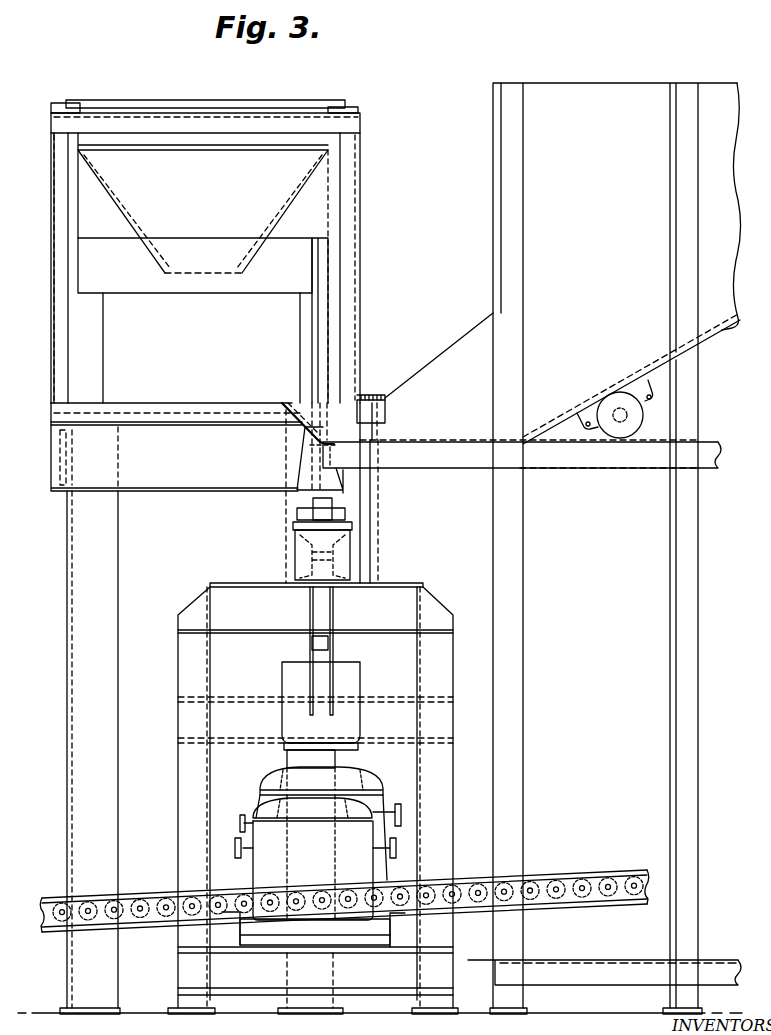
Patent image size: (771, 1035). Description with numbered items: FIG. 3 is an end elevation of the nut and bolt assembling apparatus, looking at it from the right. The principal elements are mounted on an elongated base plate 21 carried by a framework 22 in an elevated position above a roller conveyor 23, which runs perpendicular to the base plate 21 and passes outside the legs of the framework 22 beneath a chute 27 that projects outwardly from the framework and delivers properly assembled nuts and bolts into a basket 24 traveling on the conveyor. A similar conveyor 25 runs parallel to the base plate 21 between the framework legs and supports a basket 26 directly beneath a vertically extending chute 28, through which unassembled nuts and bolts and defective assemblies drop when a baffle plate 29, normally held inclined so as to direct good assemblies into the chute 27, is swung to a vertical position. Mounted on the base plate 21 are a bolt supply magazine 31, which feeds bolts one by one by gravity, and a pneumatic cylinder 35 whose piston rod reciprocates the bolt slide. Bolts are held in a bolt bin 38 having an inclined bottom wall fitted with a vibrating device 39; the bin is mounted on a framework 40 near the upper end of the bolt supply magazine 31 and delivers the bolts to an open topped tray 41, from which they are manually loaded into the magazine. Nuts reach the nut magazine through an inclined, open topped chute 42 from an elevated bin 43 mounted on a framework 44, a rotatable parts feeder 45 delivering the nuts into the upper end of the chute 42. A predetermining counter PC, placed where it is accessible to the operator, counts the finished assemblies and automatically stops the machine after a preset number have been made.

The base plate 21 is at (298, 527).
The framework 22 is at (298, 556).
The roller conveyor 23 is at (535, 885).
The basket 24 is at (380, 797).
The conveyor 25 is at (360, 925).
The basket 26 is at (275, 861).
The chute 27 is at (347, 679).
The vertically extending chute 28 is at (307, 680).
The baffle plate 29 is at (322, 645).
The bolt supply magazine 31 is at (295, 462).
The pneumatic cylinder 35 is at (318, 508).
The bolt bin 38 is at (596, 244).
The vibrating device 39 is at (643, 412).
The framework 40 is at (678, 506).
The open topped tray 41 is at (282, 403).
The inclined open topped chute 42 is at (322, 346).
The elevated bin 43 is at (211, 198).
The framework 44 is at (108, 532).
The rotatable parts feeder 45 is at (134, 279).
The predetermining counter PC is at (384, 395).